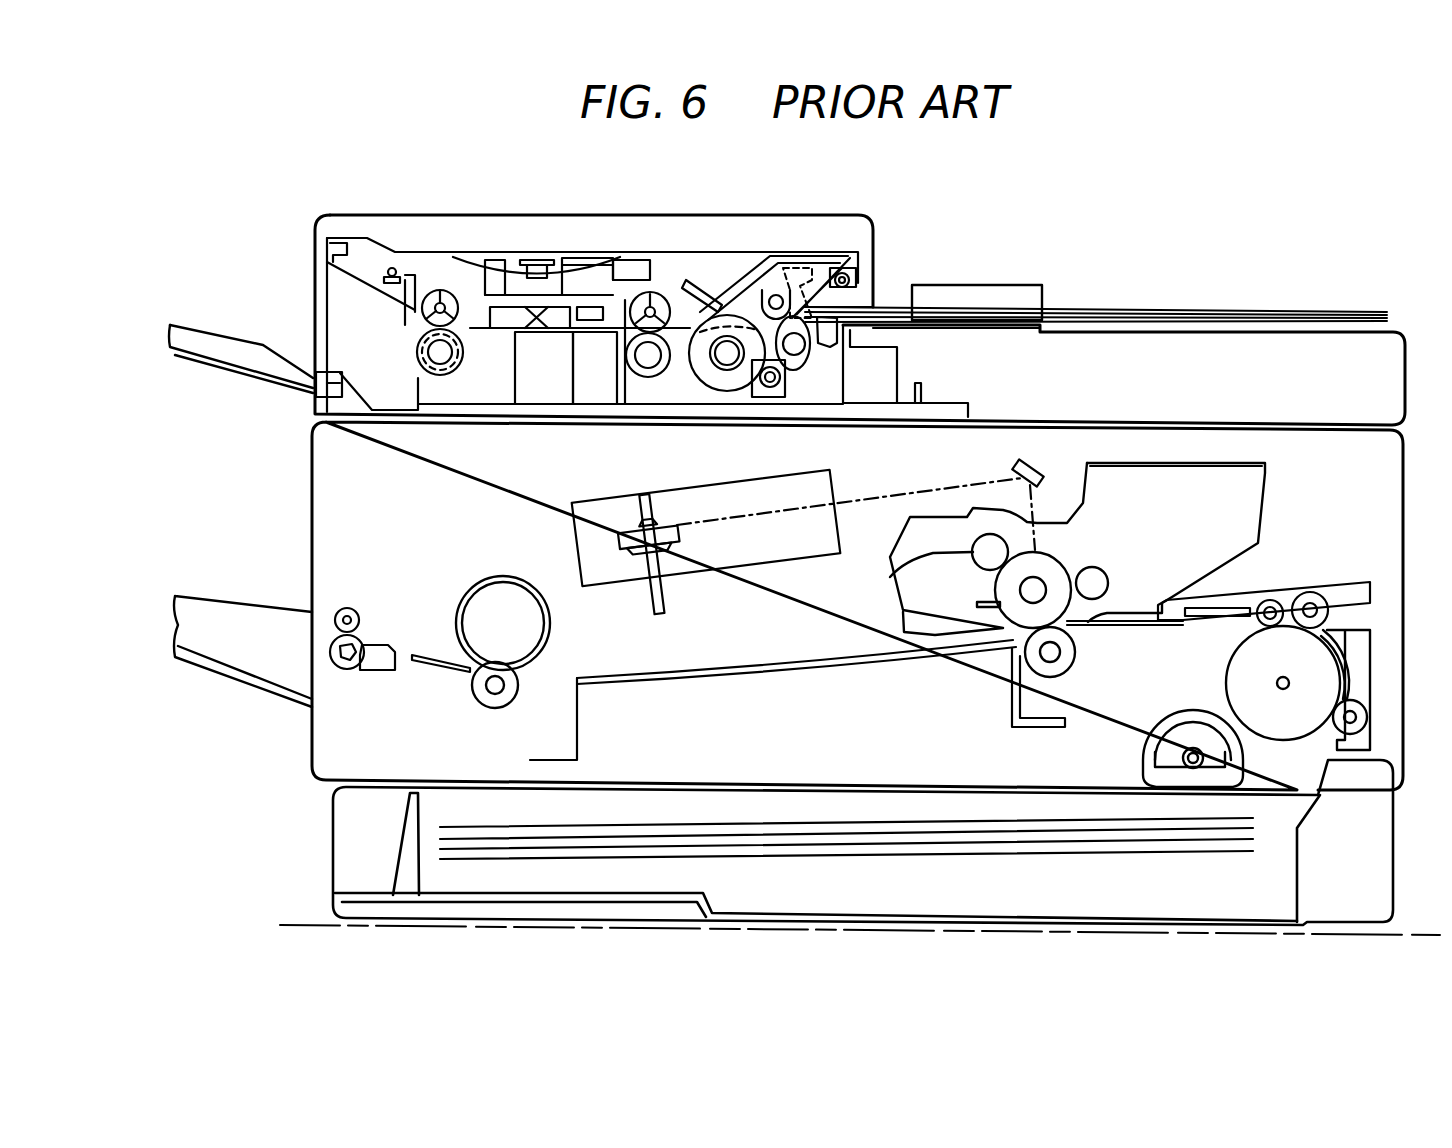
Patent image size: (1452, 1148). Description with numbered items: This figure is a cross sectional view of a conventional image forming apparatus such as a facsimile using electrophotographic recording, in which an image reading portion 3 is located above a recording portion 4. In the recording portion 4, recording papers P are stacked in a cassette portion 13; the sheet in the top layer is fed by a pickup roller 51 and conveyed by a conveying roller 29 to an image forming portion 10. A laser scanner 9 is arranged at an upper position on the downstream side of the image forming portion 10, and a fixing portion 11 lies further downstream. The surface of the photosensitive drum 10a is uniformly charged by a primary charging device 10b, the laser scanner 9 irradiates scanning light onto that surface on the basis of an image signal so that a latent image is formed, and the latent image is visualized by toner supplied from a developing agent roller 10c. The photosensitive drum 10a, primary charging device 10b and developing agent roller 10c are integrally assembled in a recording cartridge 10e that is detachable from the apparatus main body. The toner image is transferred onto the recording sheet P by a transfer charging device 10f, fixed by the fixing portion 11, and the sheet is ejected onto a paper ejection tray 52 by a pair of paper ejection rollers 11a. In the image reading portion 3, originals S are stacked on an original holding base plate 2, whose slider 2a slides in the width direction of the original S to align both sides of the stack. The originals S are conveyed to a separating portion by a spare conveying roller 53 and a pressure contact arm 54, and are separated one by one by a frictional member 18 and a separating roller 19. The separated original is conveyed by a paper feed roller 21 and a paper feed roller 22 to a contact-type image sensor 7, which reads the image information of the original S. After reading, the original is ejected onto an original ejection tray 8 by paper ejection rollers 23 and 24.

The original holding base plate 2 is at (1085, 328).
The slider 2a is at (1000, 285).
The image reading portion 3 is at (522, 262).
The recording portion 4 is at (1393, 497).
The contact-type image sensor 7 is at (551, 378).
The original ejection tray 8 is at (215, 345).
The laser scanner 9 is at (710, 492).
The image forming portion 10 is at (1077, 518).
The photosensitive drum 10a is at (1020, 620).
The primary charging device 10b is at (975, 553).
The developing agent roller 10c is at (1097, 590).
The recording cartridge 10e is at (1232, 465).
The transfer charging device 10f is at (1047, 672).
The fixing portion 11 is at (527, 647).
The paper ejection rollers 11a is at (355, 635).
The cassette portion 13 is at (1385, 843).
The frictional member 18 is at (792, 327).
The separating roller 19 is at (705, 330).
The paper feed roller 21 is at (663, 296).
The paper feed roller 22 is at (672, 335).
The paper ejection roller 23 is at (442, 330).
The paper ejection roller 24 is at (432, 294).
The conveying roller 29 is at (1238, 677).
The pickup roller 51 is at (1160, 750).
The paper ejection tray 52 is at (250, 618).
The spare conveying roller 53 is at (812, 335).
The pressure contact arm 54 is at (850, 272).
The recording paper (sheet) P is at (770, 828).
The original S is at (1178, 317).